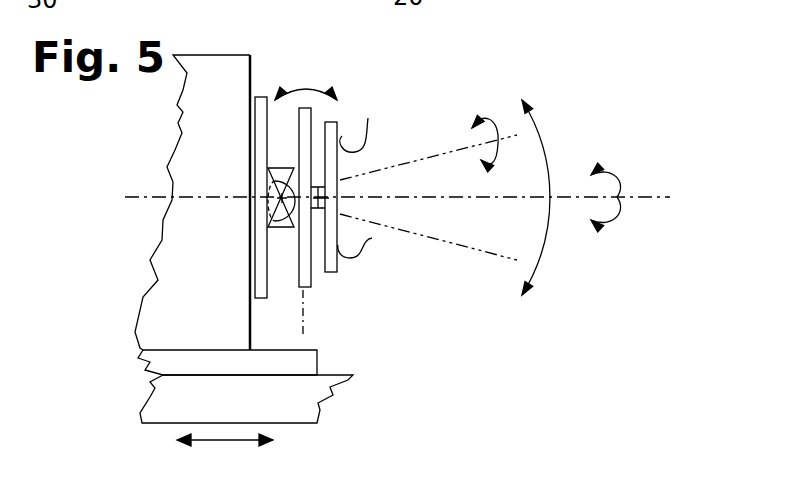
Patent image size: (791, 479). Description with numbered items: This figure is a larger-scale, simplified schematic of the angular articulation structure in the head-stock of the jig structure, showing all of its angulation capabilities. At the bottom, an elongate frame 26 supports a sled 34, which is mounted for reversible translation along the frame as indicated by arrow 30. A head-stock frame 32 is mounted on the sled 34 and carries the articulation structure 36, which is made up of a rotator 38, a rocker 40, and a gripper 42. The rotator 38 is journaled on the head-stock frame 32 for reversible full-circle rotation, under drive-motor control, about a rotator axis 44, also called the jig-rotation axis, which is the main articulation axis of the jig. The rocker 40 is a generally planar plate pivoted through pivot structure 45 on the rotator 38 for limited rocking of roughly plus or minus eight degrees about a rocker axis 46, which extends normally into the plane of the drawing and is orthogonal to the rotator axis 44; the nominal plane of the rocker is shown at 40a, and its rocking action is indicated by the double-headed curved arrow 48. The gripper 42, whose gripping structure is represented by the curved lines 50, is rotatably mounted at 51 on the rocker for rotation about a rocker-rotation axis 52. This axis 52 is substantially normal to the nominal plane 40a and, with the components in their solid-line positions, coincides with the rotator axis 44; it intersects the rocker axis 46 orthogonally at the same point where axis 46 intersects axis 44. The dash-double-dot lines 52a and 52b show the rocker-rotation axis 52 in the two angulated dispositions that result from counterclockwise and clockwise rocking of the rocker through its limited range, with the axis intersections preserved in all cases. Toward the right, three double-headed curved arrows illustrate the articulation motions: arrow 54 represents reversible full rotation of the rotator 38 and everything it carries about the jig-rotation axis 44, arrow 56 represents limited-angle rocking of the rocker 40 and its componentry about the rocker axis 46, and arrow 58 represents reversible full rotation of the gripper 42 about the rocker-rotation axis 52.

The elongate frame 26 is at (160, 410).
The arrow 30 is at (208, 443).
The head-stock frame 32 is at (183, 110).
The sled 34 is at (150, 358).
The articulation structure 36 is at (135, 147).
The rotator 38 is at (261, 97).
The rocker 40 is at (303, 288).
The nominal plane of rocker 40a is at (303, 334).
The gripper 42 is at (332, 273).
The rotator axis 44 is at (126, 196).
The pivot structure 45 is at (285, 218).
The rocker axis 46 is at (278, 200).
The double-headed curved arrow 48 is at (328, 72).
The gripping structure 50 is at (370, 178).
The rotatable mounting 51 is at (318, 183).
The rocker-rotation axis 52 is at (425, 200).
The angulated disposition of rocker-rotation axis 52a is at (443, 131).
The angulated disposition of rocker-rotation axis 52b is at (460, 248).
The double-headed curved arrow 54 is at (618, 192).
The double-headed curved arrow 56 is at (543, 150).
The double-headed curved arrow 58 is at (481, 114).